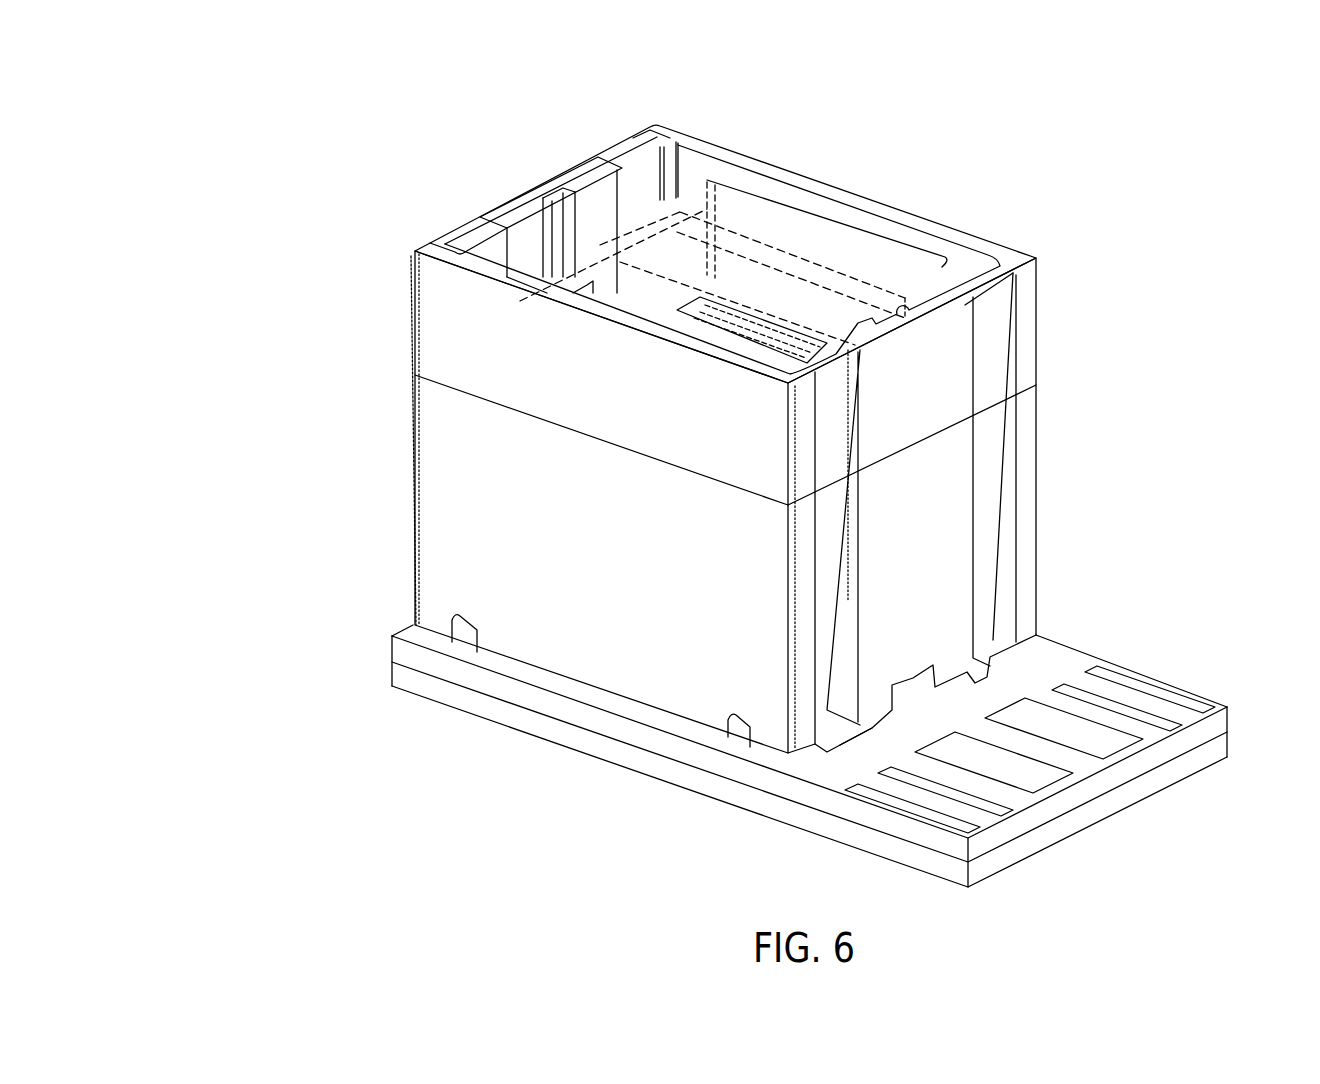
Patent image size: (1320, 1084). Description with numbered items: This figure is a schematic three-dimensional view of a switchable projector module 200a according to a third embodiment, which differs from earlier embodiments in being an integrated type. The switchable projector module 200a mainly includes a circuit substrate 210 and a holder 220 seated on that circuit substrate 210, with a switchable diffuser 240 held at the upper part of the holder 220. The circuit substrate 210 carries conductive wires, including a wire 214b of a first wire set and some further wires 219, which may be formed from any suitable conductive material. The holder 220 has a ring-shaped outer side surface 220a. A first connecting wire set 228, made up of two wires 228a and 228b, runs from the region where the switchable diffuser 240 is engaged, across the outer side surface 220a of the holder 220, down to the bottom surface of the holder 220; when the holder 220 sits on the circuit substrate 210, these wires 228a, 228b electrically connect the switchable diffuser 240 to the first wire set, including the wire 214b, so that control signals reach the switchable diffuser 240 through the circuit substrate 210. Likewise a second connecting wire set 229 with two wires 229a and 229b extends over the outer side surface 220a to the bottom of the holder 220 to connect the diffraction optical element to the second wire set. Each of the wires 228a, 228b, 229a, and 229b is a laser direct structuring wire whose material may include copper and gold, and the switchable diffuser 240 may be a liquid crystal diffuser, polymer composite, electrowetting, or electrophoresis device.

The switchable projector module 200a is at (251, 105).
The circuit substrate 210 is at (869, 838).
The wire 214b is at (838, 733).
The wires 219 is at (997, 807).
The holder 220 is at (570, 592).
The outer side surface 220a is at (452, 468).
The first connecting wire set 228 is at (1200, 272).
The wire 228a is at (1020, 338).
The wire 228b is at (835, 405).
The second connecting wire set 229 is at (596, 85).
The wire 229a is at (618, 162).
The wire 229b is at (477, 233).
The switchable diffuser 240 is at (775, 225).